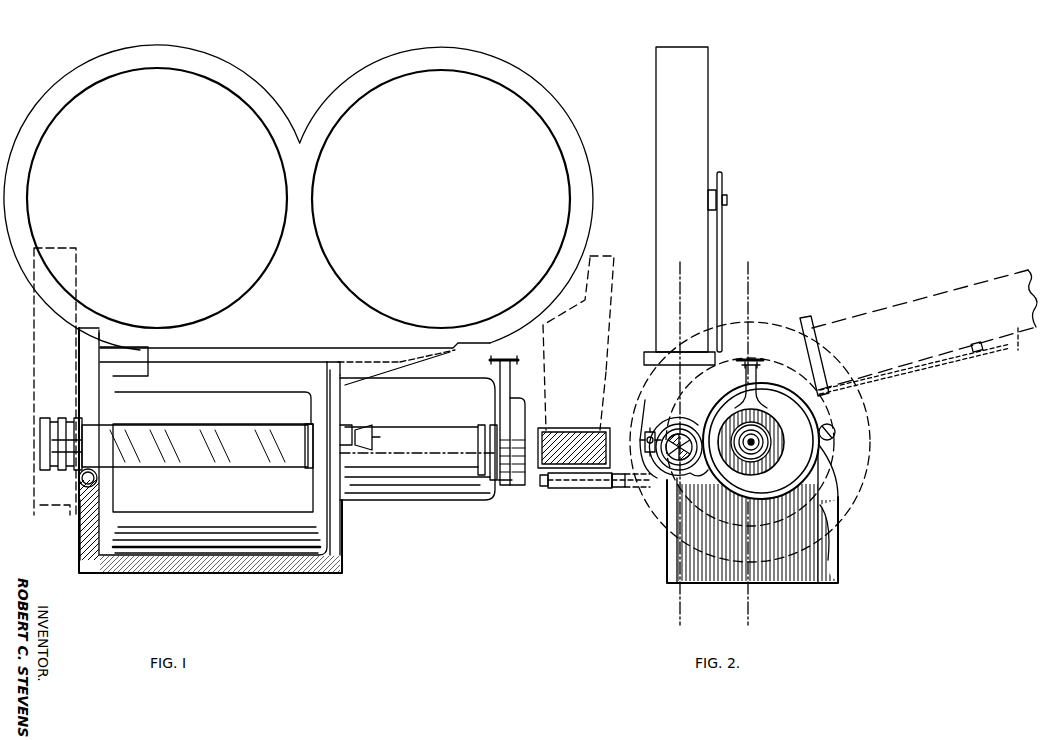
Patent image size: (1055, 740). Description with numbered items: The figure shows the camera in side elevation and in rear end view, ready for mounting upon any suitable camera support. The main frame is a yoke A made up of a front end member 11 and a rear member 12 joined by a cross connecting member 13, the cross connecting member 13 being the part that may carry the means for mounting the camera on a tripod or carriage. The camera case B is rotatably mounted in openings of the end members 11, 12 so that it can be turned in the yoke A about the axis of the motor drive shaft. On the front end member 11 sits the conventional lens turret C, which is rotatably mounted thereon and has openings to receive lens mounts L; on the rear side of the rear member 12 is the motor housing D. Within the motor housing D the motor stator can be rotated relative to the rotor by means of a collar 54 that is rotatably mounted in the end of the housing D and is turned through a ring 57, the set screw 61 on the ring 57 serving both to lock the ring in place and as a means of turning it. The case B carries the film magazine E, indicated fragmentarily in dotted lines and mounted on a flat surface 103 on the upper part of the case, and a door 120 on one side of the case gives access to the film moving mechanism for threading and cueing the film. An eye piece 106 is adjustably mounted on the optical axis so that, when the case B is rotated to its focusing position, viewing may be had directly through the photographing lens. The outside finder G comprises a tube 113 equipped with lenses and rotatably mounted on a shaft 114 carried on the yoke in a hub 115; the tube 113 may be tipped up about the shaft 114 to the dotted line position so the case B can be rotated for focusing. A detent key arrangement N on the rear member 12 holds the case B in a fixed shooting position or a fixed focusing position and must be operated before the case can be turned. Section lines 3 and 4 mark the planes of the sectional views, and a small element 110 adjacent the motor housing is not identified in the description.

In FIG. 1, the film magazine E is at (388, 54).
In FIG. 2, the film magazine E is at (713, 114).
In FIG. 1, the cross connecting member 13 is at (34, 301).
In FIG. 1, the end member 11 is at (88, 348).
In FIG. 1, the rear member 12 is at (333, 393).
In FIG. 1, the flat surface 103 is at (272, 360).
In FIG. 1, the door 120 is at (210, 418).
In FIG. 1, the tube 113 is at (238, 467).
In FIG. 1, the lens mount L is at (40, 456).
In FIG. 1, the shaft 114 is at (80, 481).
In FIG. 1, the lens turret C is at (73, 524).
In FIG. 1, the camera case B is at (258, 546).
In FIG. 2, the camera case B is at (644, 528).
In FIG. 1, the yoke A is at (290, 571).
In FIG. 2, the yoke A is at (712, 587).
In FIG. 1, the detent key arrangement N is at (350, 445).
In FIG. 2, the detent key arrangement N is at (636, 442).
In FIG. 1, the motor housing D is at (437, 499).
In FIG. 2, the motor housing D is at (813, 447).
In FIG. 1, the eye piece 106 is at (490, 470).
In FIG. 2, the eye piece 106 is at (690, 434).
In FIG. 1, the set screw 61 is at (506, 360).
In FIG. 1, the collar 54 is at (514, 400).
In FIG. 1, the ring 57 is at (505, 482).
In FIG. 1, the outside finder arrangement G is at (555, 492).
In FIG. 1, the hub 115 is at (625, 489).
In FIG. 2, the hub pin 110 is at (835, 433).
In FIG. 2, the section line 4 is at (675, 277).
In FIG. 2, the section line 3 is at (743, 277).